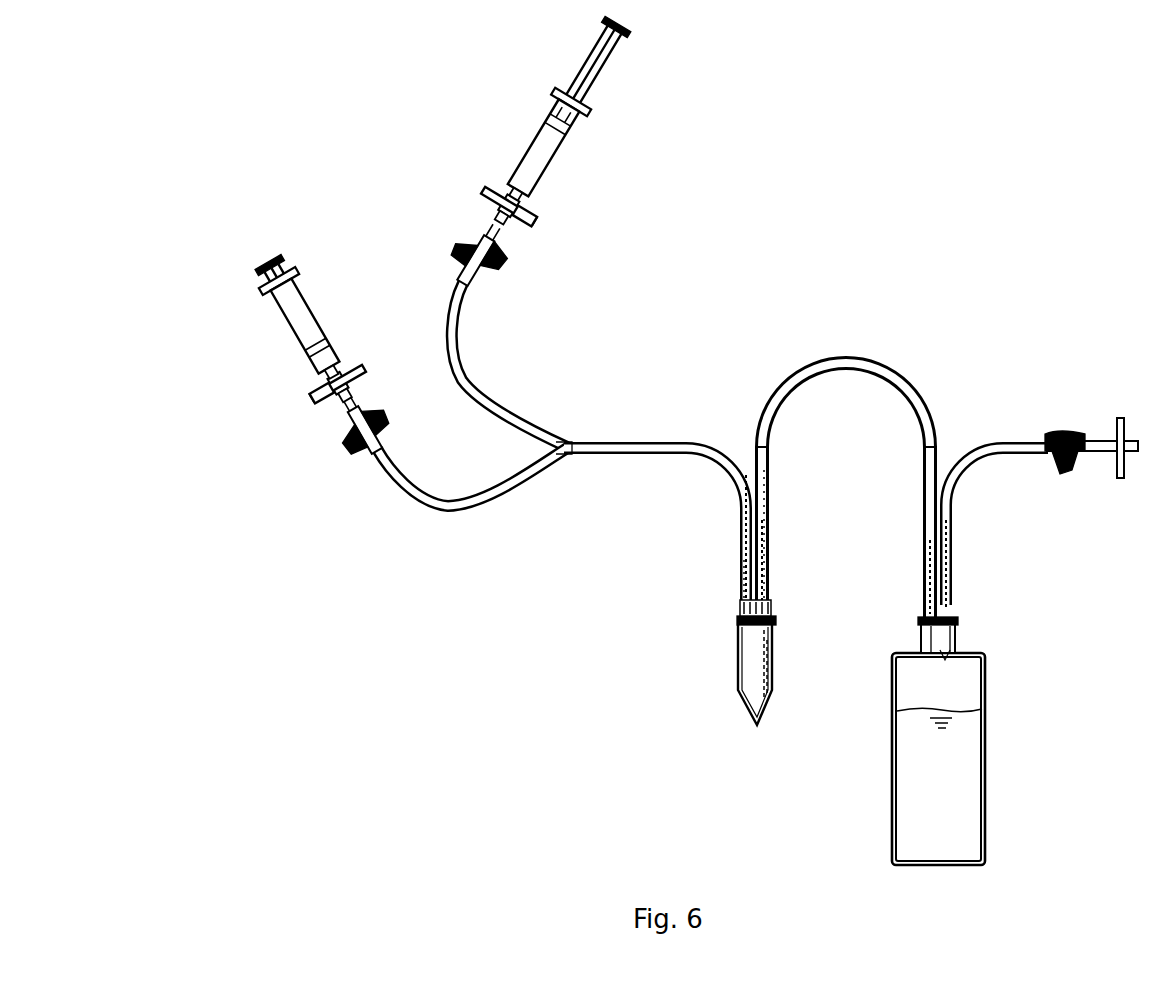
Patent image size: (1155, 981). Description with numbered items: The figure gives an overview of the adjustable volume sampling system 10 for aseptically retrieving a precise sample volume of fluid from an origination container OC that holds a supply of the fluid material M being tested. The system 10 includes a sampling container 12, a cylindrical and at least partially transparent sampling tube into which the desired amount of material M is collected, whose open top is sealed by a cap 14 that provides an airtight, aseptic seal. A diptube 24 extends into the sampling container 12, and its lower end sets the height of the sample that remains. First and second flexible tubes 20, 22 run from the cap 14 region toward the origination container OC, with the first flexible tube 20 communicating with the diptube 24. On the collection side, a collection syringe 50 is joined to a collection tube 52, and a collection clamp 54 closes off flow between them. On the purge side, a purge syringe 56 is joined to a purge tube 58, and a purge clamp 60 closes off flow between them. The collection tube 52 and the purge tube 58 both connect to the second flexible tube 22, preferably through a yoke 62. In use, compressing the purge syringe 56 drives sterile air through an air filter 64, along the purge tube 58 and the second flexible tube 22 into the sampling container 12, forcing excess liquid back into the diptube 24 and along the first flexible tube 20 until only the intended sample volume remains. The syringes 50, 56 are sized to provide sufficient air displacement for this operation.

The sampling system 10 is at (818, 180).
The sampling container 12 is at (739, 675).
The cap 14 is at (775, 617).
The first flexible tube 20 is at (773, 497).
The second flexible tube 22 is at (698, 390).
The diptube 24 is at (771, 660).
The collection syringe 50 is at (279, 323).
The collection tube 52 is at (434, 511).
The collection clamp 54 is at (347, 444).
The purge syringe 56 is at (522, 150).
The purge tube 58 is at (466, 348).
The purge clamp 60 is at (464, 240).
The yoke 62 is at (570, 458).
The air filter 64 is at (550, 213).
The origination container OC is at (985, 680).
The fluid material M is at (950, 780).